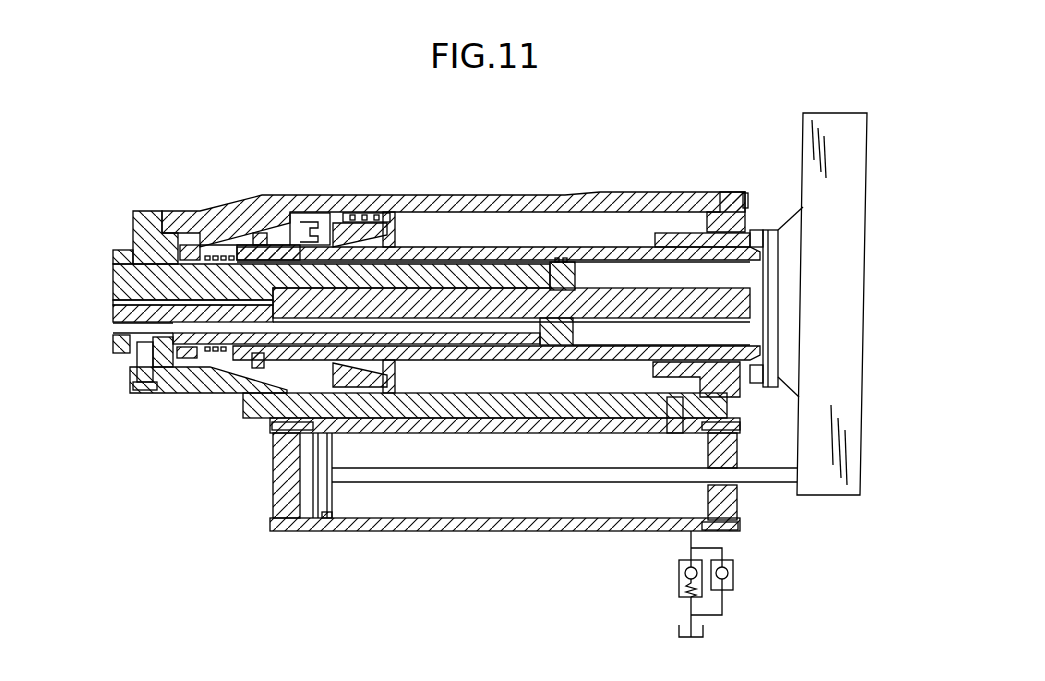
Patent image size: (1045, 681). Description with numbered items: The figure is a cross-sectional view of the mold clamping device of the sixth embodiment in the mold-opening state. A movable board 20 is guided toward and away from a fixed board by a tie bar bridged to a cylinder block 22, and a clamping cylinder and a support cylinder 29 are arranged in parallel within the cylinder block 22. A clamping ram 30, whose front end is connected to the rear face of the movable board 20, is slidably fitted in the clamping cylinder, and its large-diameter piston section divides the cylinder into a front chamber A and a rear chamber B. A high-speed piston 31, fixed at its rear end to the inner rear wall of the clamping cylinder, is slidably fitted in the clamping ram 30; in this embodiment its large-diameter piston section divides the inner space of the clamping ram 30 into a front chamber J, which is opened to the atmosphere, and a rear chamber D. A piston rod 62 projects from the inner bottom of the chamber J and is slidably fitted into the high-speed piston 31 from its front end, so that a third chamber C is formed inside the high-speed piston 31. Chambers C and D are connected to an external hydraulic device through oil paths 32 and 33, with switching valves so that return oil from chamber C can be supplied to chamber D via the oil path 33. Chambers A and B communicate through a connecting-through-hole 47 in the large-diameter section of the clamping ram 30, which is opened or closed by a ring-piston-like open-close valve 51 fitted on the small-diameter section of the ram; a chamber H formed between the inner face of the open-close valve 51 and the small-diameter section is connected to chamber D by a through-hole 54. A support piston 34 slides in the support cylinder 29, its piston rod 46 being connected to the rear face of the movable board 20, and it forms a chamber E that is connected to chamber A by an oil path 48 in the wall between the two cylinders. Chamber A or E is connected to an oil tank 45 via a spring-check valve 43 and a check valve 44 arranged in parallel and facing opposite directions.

The movable board 20 is at (853, 172).
The cylinder block 22 is at (160, 200).
The support cylinder 29 is at (488, 508).
The clamping ram 30 is at (413, 247).
The high-speed piston 31 is at (440, 263).
The oil path 32 is at (115, 300).
The oil path 33 is at (130, 353).
The support piston 34 is at (317, 497).
The spring-check valve 43 is at (678, 582).
The check valve 44 is at (733, 587).
The oil tank 45 is at (705, 637).
The piston rod 46 is at (367, 480).
The connecting-through-hole 47 is at (353, 233).
The oil path 48 is at (677, 430).
The open-close valve 51 is at (277, 362).
The through-hole 54 is at (253, 358).
The piston rod 62 is at (741, 303).
The front chamber A is at (480, 220).
The rear chamber B is at (199, 240).
The third chamber C is at (257, 277).
The rear chamber D is at (522, 262).
The chamber E is at (413, 500).
The chamber H is at (285, 230).
The front chamber J is at (730, 330).